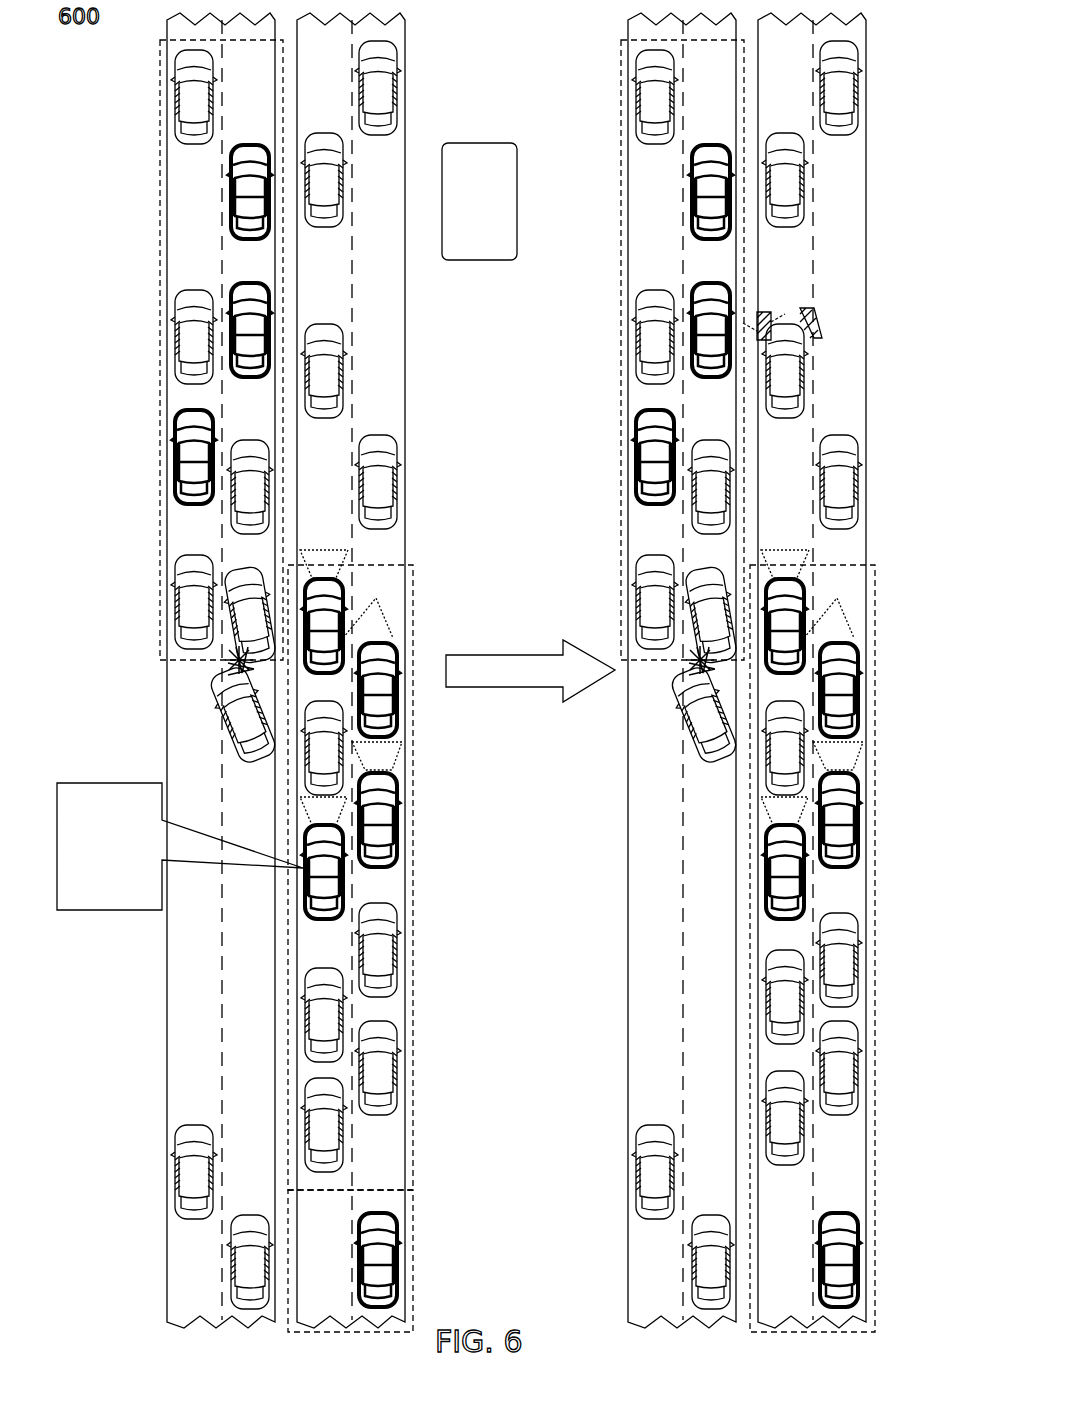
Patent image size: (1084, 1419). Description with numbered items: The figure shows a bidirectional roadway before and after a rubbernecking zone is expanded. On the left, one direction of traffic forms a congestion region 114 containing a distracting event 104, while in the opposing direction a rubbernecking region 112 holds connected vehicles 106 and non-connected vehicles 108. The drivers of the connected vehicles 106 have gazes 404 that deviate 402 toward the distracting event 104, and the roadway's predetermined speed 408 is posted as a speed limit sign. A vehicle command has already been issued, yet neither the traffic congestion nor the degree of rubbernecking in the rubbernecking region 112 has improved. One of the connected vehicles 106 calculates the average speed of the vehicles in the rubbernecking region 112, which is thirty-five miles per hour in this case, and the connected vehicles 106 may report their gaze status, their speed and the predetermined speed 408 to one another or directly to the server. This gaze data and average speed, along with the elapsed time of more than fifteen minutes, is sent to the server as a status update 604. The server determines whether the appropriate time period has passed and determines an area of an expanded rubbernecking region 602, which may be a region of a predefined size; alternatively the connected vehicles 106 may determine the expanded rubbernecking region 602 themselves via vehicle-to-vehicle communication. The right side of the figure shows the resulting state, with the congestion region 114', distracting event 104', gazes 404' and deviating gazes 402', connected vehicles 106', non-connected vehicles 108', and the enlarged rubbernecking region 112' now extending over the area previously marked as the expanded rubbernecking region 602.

The congestion region 114 is at (188, 350).
The congestion region 114' is at (646, 350).
The distracting event 104 is at (229, 666).
The distracting event 104' is at (688, 666).
The gaze 404 is at (324, 539).
The gaze 404' is at (785, 539).
The deviating gaze 402 is at (385, 749).
The deviating gaze 402' is at (849, 749).
The connected vehicle 106 is at (414, 975).
The connected vehicle 106' is at (877, 975).
The non-connected vehicle 108 is at (415, 1009).
The non-connected vehicle 108' is at (814, 1014).
The rubbernecking region 112 is at (385, 877).
The rubbernecking region 112' is at (851, 948).
The expanded rubbernecking region 602 is at (402, 1194).
The status update 604 is at (104, 782).
The predetermined speed 408 is at (517, 202).